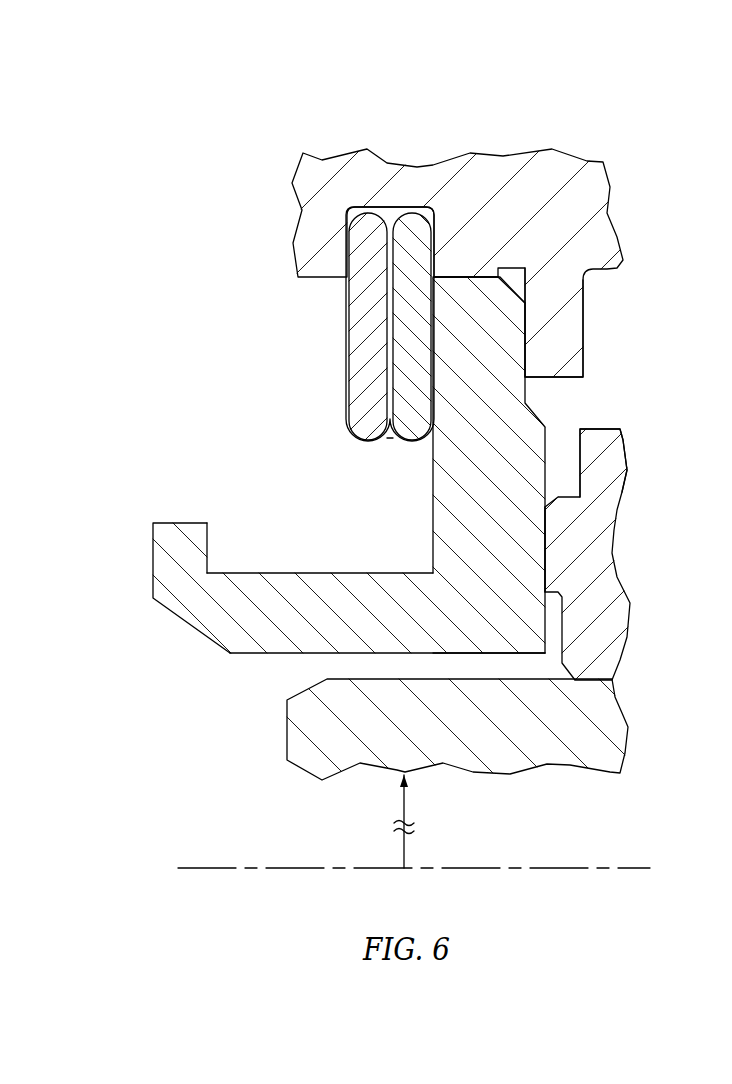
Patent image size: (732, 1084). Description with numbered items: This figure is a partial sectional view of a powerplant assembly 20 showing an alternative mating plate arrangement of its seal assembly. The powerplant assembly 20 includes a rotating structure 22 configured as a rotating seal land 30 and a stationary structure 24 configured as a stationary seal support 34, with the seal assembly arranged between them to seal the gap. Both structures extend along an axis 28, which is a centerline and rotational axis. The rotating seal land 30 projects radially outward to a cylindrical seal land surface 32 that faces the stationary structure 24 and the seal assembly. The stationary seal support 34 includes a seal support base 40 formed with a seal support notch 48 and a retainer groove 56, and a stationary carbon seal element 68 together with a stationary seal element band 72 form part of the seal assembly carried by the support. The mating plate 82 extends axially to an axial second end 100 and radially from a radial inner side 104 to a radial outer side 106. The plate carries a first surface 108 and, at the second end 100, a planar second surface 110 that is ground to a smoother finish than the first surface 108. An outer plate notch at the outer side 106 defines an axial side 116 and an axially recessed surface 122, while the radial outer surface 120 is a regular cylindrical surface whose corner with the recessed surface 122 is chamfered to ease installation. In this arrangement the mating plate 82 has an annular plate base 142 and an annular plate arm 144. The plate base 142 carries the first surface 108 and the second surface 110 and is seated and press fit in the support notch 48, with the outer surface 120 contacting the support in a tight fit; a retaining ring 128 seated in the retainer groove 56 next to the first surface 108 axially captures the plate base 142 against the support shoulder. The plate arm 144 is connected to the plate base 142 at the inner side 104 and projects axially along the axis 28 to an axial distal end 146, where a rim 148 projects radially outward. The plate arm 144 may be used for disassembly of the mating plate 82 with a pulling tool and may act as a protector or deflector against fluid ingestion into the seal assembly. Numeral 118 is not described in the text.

The powerplant assembly 20 is at (595, 112).
The rotating structure 22 is at (390, 731).
The rotating seal land 30 is at (270, 747).
The stationary structure 24 is at (475, 220).
The stationary seal support 34 is at (326, 136).
The axis 28 is at (190, 868).
The seal land surface 32 is at (432, 679).
The seal support base 40 is at (580, 195).
The seal support notch 48 is at (521, 274).
The retainer groove 56 is at (360, 322).
The stationary carbon seal element 68 is at (633, 554).
The stationary seal element band 72 is at (621, 452).
The mating plate 82 is at (325, 503).
The axial second end 100 is at (633, 549).
The second surface 110 is at (545, 537).
The radial inner side 104 is at (496, 691).
The second interface 118 is at (505, 655).
The radial outer side 106 is at (479, 236).
The radial outer surface 120 is at (475, 277).
The axial side of the outer plate notch 116 is at (612, 322).
The axially recessed surface 122 is at (525, 343).
The first surface 108 is at (420, 358).
The retaining ring 128 is at (378, 458).
The plate base 142 is at (508, 476).
The plate arm 144 is at (340, 620).
The axial distal end 146 is at (153, 558).
The rim 148 is at (207, 545).